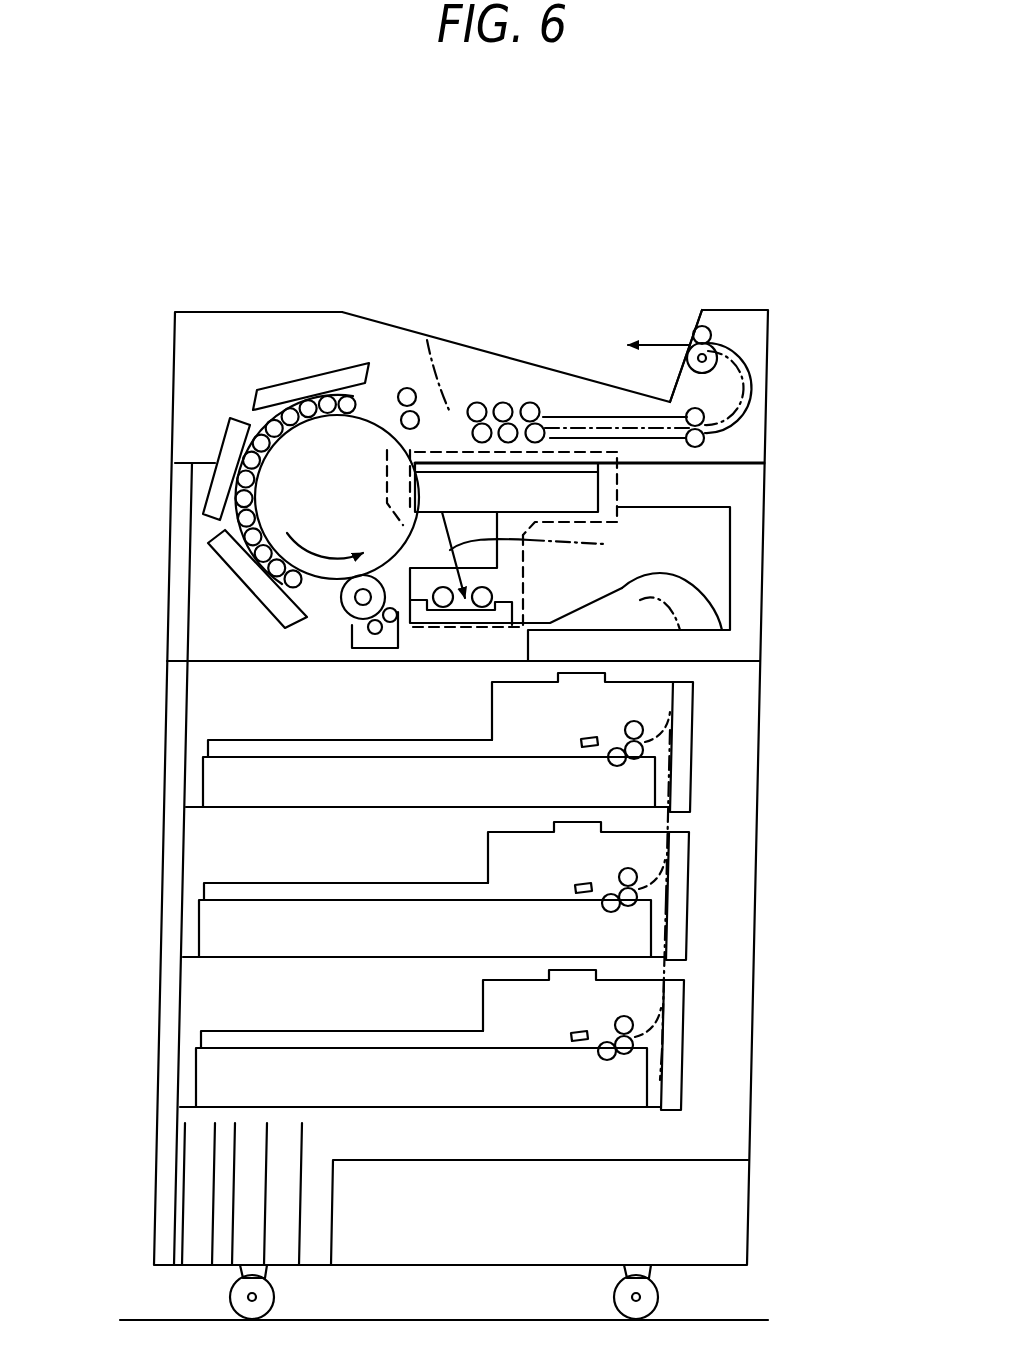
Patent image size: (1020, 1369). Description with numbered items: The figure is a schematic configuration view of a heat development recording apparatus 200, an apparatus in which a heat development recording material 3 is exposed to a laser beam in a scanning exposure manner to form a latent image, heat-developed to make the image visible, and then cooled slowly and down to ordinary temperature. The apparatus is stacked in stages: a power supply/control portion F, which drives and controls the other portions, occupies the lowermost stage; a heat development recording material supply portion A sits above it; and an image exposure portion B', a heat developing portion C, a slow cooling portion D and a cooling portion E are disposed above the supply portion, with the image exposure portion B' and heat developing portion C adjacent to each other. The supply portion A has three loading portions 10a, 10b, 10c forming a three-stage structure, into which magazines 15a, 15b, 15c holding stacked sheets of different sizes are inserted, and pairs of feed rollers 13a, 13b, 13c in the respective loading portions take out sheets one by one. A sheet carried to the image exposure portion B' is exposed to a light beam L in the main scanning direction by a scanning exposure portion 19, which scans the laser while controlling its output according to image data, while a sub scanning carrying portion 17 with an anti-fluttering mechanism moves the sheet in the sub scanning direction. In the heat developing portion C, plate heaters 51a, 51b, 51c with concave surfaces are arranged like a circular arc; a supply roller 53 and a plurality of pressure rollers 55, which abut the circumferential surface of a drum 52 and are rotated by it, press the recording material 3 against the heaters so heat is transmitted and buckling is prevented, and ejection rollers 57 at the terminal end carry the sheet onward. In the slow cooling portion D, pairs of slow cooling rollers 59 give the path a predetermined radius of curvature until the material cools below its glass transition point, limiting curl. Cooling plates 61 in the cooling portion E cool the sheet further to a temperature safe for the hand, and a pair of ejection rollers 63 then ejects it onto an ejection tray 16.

The heat development recording apparatus 200 is at (522, 228).
The heat developing portion C is at (237, 390).
The plate heater 51c is at (310, 385).
The ejection rollers 57 is at (405, 387).
The heat development recording material 3 is at (427, 340).
The slow cooling portion D is at (500, 390).
The slow cooling rollers 59 is at (532, 401).
The scanning exposure portion 19 is at (570, 456).
The cooling portion E is at (590, 408).
The ejection tray 16 is at (606, 398).
The cooling plates 61 is at (667, 390).
The ejection rollers 63 is at (724, 327).
The drum 52 is at (295, 485).
The plate heater 51b is at (227, 445).
The pressure rollers 55 is at (232, 498).
The plate heater 51a is at (237, 577).
The supply roller 53 is at (333, 624).
The sub scanning carrying portion 17 is at (437, 628).
The magazine 15a is at (404, 770).
The feed rollers 13a is at (614, 740).
The loading portion 10a is at (702, 729).
The magazine 15b is at (381, 907).
The feed rollers 13b is at (608, 886).
The loading portion 10b is at (698, 886).
The magazine 15c is at (387, 1047).
The feed rollers 13c is at (604, 1033).
The loading portion 10c is at (696, 1031).
The heat development recording material supply portion A is at (818, 665).
The power supply/control portion F is at (818, 1117).
The light beam L is at (536, 545).
The image exposure portion B' is at (510, 581).